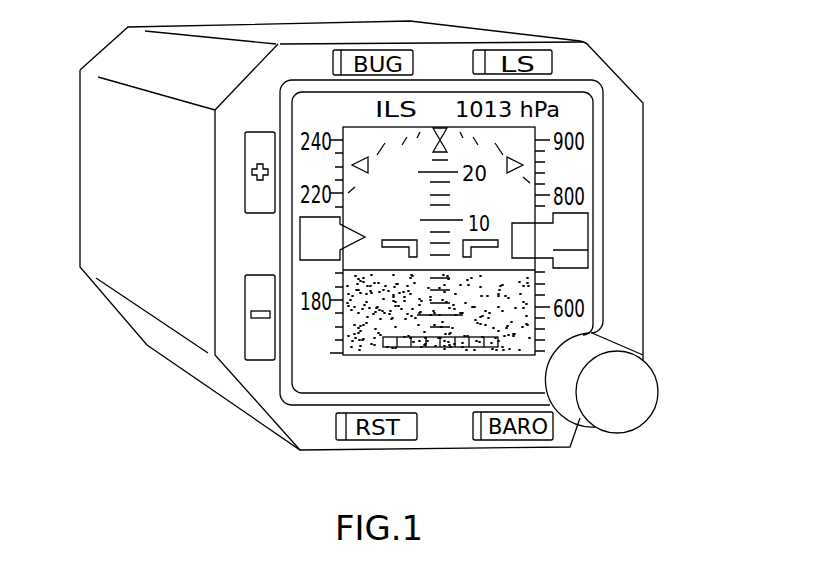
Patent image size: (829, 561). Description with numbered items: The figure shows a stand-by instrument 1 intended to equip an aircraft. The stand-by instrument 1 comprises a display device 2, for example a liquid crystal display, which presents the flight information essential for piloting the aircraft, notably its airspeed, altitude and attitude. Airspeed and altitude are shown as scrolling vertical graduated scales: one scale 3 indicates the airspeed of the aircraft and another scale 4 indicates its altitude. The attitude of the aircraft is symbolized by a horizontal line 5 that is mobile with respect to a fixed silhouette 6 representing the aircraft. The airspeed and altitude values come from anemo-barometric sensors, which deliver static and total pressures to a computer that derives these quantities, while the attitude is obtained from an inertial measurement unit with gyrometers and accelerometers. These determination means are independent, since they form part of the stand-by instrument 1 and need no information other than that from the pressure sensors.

The stand-by instrument 1 is at (652, 55).
The display device 2 is at (310, 380).
The scale 3 is at (300, 235).
The scale 4 is at (588, 250).
The horizontal line 5 is at (493, 272).
The fixed silhouette 6 is at (420, 250).